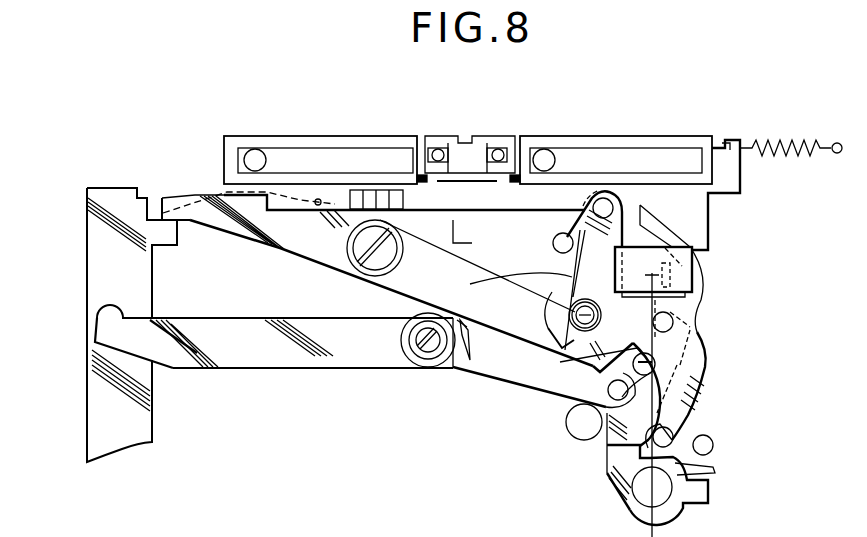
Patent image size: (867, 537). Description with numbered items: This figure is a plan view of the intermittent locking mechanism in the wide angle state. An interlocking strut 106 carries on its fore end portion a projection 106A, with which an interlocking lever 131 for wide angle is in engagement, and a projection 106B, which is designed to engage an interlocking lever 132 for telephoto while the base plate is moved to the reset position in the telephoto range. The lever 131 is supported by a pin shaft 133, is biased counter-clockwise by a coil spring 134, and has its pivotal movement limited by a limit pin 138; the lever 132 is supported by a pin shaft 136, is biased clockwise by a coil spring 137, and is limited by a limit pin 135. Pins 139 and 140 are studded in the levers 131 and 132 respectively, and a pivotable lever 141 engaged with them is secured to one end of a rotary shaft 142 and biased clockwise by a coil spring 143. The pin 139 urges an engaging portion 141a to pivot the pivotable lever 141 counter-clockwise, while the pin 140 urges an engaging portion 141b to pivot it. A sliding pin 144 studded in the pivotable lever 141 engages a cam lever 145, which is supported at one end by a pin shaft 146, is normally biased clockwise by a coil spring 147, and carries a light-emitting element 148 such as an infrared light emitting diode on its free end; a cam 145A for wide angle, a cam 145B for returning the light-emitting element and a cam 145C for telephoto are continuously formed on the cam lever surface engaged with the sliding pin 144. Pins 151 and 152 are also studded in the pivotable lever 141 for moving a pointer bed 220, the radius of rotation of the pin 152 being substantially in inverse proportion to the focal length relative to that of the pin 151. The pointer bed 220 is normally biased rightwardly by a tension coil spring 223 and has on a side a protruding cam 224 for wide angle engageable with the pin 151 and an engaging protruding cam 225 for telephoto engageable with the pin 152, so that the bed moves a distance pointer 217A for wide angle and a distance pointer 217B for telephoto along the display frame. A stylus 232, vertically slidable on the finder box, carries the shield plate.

The interlocking strut 106 is at (95, 413).
The projection 106A is at (160, 248).
The projection 106B is at (108, 186).
The interlocking lever for wide angle 131 is at (275, 251).
The interlocking lever for telephoto 132 is at (432, 372).
The pin shaft 133 is at (360, 255).
The coil spring 134 is at (392, 290).
The limit pin 135 is at (576, 432).
The pin shaft 136 is at (420, 345).
The coil spring 137 is at (465, 335).
The limit pin 138 is at (553, 247).
The pin 139 is at (657, 362).
The pin 140 is at (610, 395).
The pivotable lever 141 is at (712, 368).
The engaging portion 141a is at (645, 362).
The engaging portion 141b is at (571, 362).
The rotary shaft 142 is at (576, 315).
The coil spring 143 is at (505, 283).
The sliding pin 144 is at (675, 432).
The cam lever 145 is at (603, 468).
The cam for wide angle 145A is at (698, 390).
The cam for returning the light-emitting element 145B is at (702, 295).
The cam for telephoto 145C is at (693, 263).
The pin shaft 146 is at (643, 493).
The coil spring 147 is at (716, 470).
The light-emitting element 148 is at (676, 262).
The pin 151 is at (607, 197).
The pin 152 is at (672, 312).
The distance pointer for wide angle 217A is at (423, 136).
The distance pointer for telephoto 217B is at (516, 136).
The pointer bed 220 is at (703, 135).
The tension coil spring 223 is at (782, 140).
The protruding cam for wide angle 224 is at (540, 219).
The engaging protruding cam for telephoto 225 is at (697, 222).
The stylus 232 is at (316, 199).